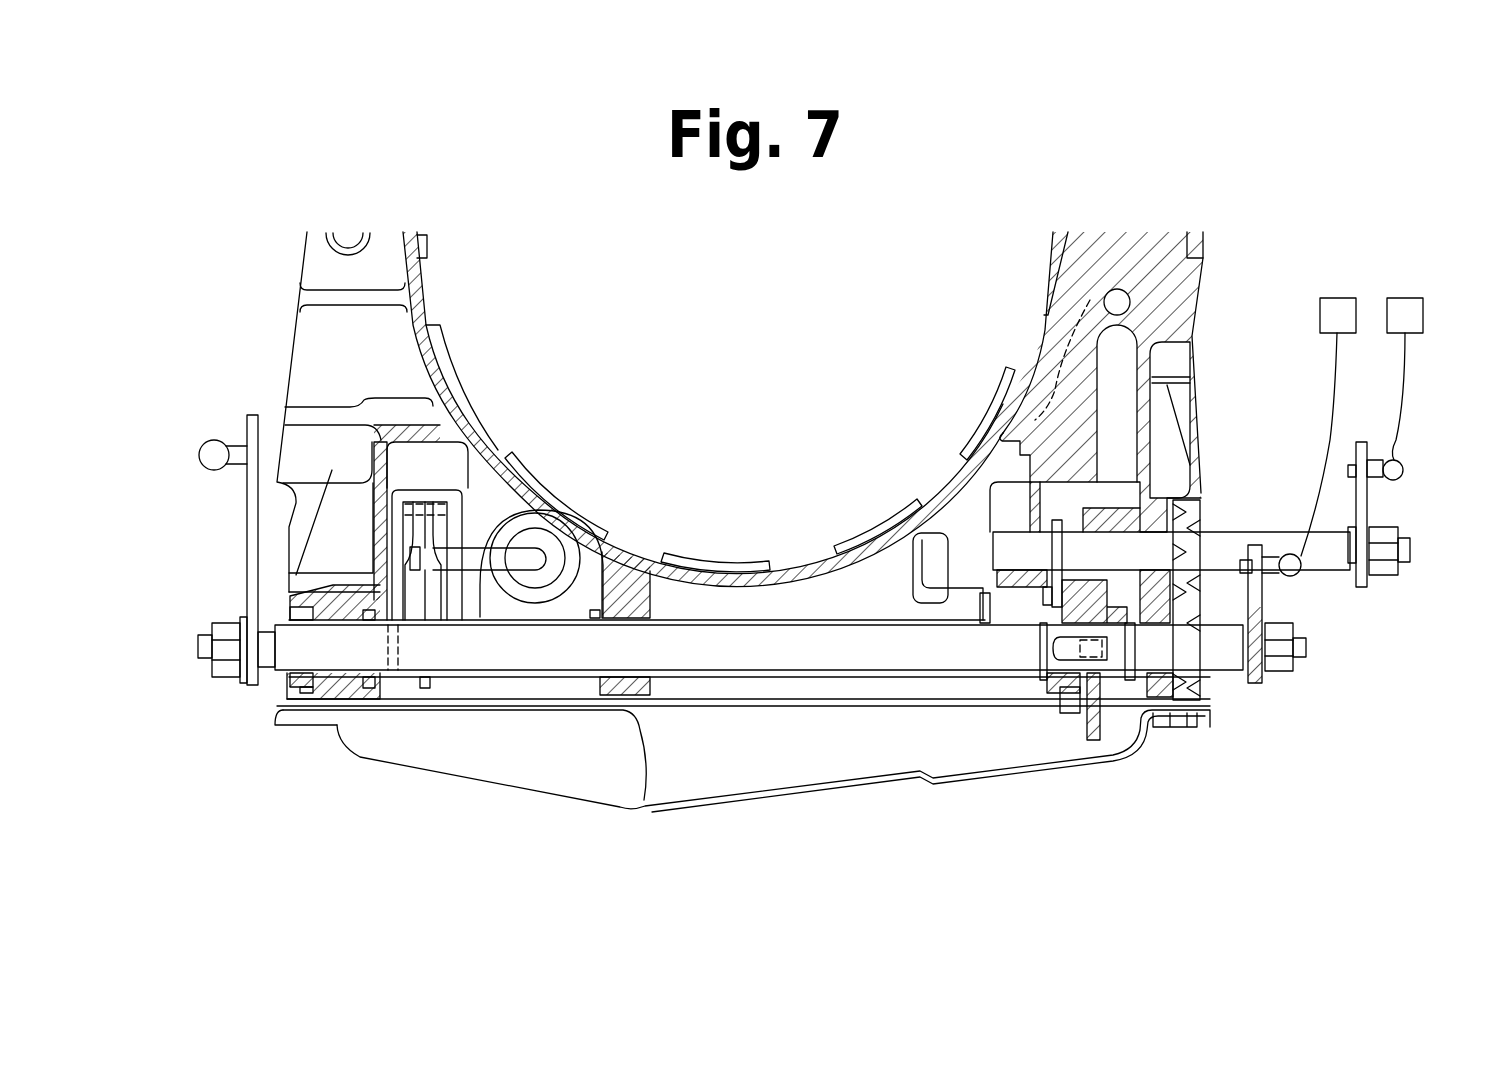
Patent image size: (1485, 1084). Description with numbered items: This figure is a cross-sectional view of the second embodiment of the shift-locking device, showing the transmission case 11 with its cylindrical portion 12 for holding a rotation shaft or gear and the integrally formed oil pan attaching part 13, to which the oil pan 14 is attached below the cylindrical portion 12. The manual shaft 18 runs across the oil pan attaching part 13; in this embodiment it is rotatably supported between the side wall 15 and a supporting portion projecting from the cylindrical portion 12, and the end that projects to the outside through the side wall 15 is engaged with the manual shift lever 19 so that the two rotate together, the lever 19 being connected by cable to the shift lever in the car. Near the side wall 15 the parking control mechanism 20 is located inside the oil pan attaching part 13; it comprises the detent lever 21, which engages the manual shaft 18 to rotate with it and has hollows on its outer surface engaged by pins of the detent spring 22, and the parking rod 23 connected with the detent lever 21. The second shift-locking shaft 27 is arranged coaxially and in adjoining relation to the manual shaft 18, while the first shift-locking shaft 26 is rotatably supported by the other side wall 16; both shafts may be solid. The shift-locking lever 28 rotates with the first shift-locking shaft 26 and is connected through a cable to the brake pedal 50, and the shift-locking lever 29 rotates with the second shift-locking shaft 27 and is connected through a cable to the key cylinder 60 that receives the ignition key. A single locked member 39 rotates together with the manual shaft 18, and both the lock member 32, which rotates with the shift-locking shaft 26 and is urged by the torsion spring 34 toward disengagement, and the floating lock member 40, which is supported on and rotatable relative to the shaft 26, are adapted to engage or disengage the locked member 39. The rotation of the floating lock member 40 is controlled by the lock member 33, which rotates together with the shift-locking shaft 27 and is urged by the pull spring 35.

The transmission case 11 is at (1203, 261).
The cylindrical portion 12 is at (780, 568).
The oil pan attaching part 13 is at (1202, 486).
The oil pan 14 is at (808, 790).
The side wall 15 is at (322, 690).
The side wall 16 is at (1162, 690).
The manual shaft 18 is at (718, 662).
The manual shift lever 19 is at (246, 515).
The parking control mechanism 20 is at (436, 479).
The detent lever 21 is at (456, 612).
The detent spring 22 is at (440, 535).
The parking rod 23 is at (485, 545).
The first shift-locking shaft 26 is at (1283, 540).
The second shift-locking shaft 27 is at (1222, 665).
The shift-locking lever 28 is at (1363, 510).
The shift-locking lever 29 is at (1262, 597).
The lock member 32 is at (1105, 520).
The lock member 33 is at (1113, 688).
The torsion spring 34 is at (982, 618).
The pull spring 35 is at (1105, 700).
The locked member 39 is at (1062, 683).
The floating lock member 40 is at (1078, 520).
The brake pedal 50 is at (1408, 298).
The key cylinder 60 is at (1340, 298).